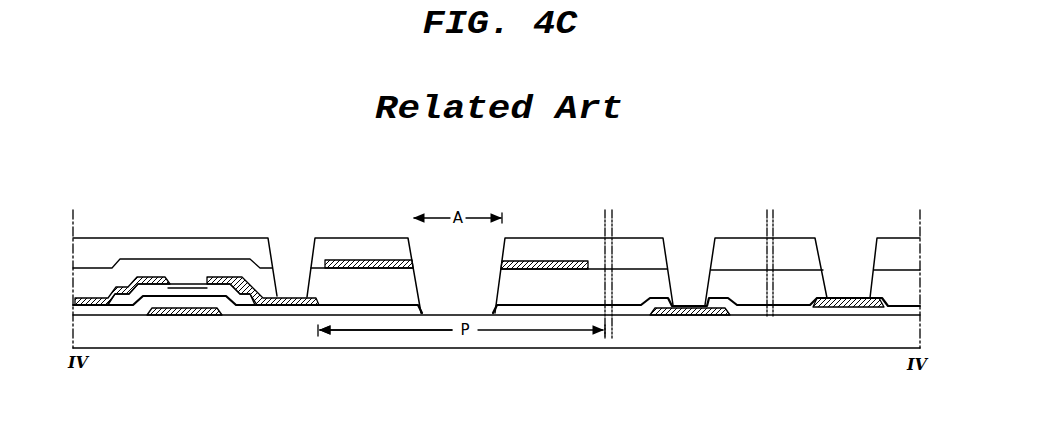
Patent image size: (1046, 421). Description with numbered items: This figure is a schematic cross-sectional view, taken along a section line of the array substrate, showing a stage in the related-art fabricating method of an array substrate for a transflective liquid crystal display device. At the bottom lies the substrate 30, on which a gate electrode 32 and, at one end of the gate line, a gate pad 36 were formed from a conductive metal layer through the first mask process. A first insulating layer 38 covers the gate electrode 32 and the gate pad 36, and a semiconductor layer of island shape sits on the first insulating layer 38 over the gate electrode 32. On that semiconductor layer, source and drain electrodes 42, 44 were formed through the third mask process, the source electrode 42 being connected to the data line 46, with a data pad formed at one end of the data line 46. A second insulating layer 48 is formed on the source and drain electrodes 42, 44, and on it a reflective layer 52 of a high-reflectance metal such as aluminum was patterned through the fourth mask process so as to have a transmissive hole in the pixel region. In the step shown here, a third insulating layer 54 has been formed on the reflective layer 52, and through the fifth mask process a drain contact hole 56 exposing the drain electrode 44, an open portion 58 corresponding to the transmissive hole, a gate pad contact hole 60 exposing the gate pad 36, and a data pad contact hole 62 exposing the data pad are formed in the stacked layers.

The substrate 30 is at (554, 347).
The gate electrode 32 is at (185, 316).
The gate pad 36 is at (693, 316).
The first insulating layer 38 is at (122, 310).
The source electrode 42 is at (150, 282).
The drain electrode 44 is at (223, 282).
The data line 46 is at (95, 297).
The second insulating layer 48 is at (185, 260).
The reflective layer 52 is at (393, 262).
The third insulating layer 54 is at (88, 237).
The drain contact hole 56 is at (292, 257).
The open portion 58 is at (470, 263).
The gate pad contact hole 60 is at (683, 249).
The data pad contact hole 62 is at (837, 254).